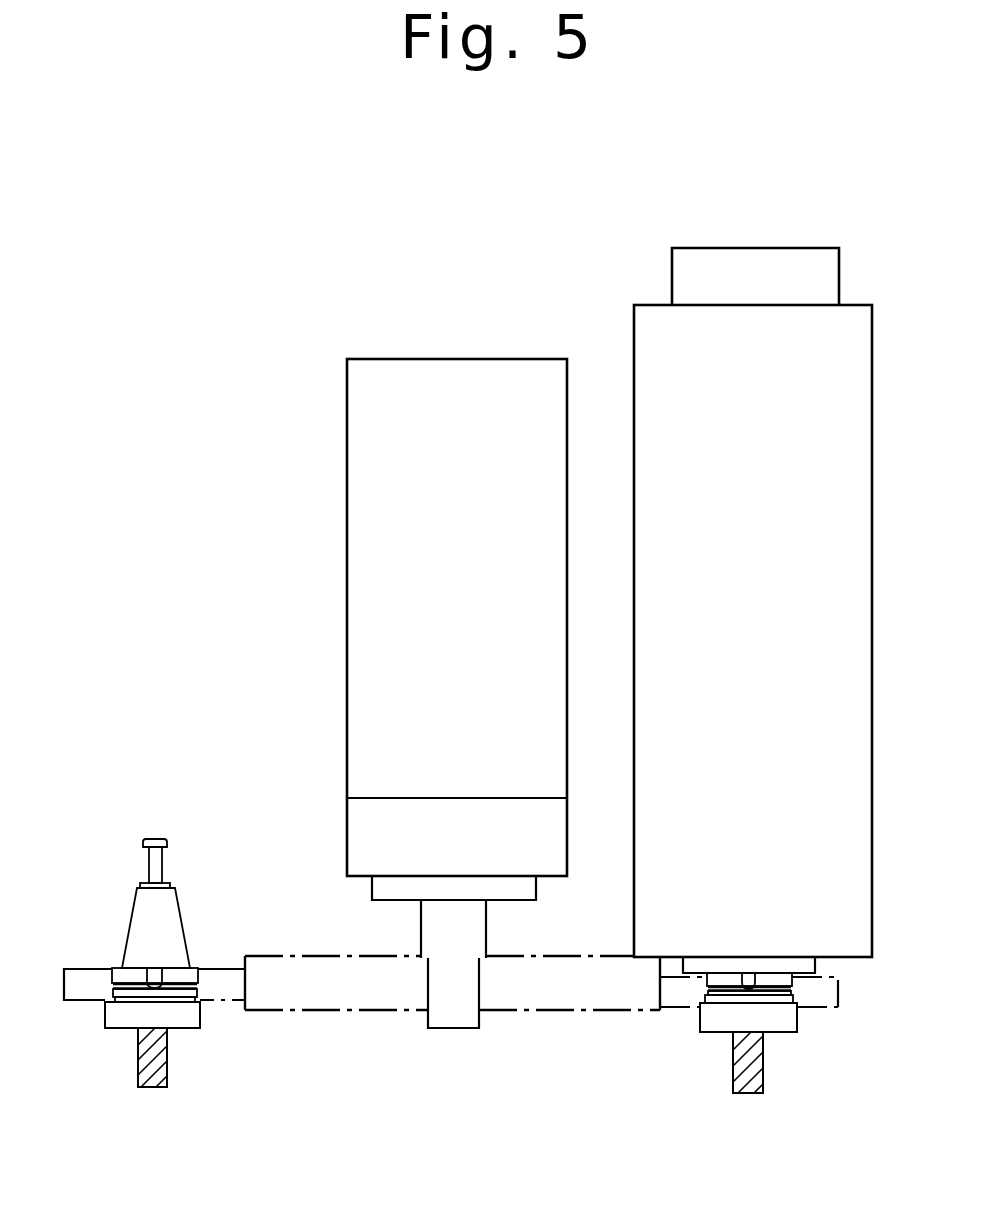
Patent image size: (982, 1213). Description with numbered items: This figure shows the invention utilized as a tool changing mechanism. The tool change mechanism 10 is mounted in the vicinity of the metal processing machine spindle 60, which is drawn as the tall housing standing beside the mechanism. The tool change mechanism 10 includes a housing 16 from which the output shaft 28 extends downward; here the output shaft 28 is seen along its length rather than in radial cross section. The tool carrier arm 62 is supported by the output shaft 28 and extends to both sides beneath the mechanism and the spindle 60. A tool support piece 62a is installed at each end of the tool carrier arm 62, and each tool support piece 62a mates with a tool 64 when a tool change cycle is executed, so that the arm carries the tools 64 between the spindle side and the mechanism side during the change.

The tool change mechanism 10 is at (336, 337).
The spindle head housing 16 is at (360, 563).
The output shaft 28 is at (452, 1018).
The metal processing machine spindle 60 is at (750, 395).
The tool carrier arm 62 is at (268, 963).
The tool support piece 62a is at (90, 993).
The tool 64 is at (187, 1022).